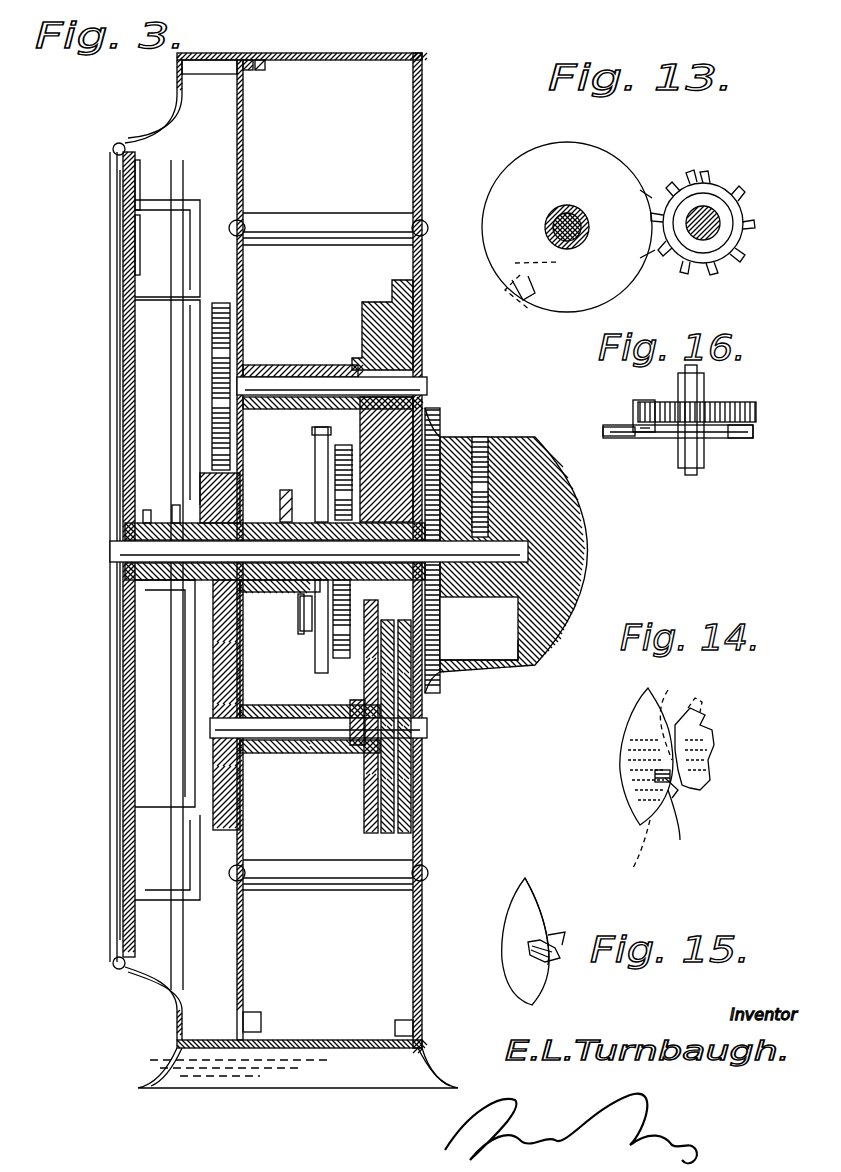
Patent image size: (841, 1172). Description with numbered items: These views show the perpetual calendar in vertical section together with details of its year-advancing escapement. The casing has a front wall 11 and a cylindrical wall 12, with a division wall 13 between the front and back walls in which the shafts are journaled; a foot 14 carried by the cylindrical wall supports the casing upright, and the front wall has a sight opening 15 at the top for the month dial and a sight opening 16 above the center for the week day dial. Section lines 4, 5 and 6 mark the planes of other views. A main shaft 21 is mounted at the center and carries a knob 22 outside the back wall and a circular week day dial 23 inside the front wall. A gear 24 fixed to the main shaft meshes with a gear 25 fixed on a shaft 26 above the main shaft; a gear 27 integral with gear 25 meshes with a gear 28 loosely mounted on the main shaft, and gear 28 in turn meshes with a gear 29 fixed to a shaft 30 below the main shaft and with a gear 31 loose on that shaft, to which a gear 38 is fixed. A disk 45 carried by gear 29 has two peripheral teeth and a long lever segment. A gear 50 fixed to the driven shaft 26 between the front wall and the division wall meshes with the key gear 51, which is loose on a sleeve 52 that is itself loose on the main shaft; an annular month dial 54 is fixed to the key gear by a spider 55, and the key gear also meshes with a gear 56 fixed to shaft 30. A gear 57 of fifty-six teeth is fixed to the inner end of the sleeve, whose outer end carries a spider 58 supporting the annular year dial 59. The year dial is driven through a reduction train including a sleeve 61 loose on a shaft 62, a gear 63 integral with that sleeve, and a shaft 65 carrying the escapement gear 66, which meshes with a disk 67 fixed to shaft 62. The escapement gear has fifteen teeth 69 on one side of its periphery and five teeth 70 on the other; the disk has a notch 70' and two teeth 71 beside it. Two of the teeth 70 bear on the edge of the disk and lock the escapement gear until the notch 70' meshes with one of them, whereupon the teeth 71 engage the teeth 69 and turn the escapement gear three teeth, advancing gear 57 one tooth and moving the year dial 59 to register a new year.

In FIG. 3, the section line 4 is at (212, 935).
In FIG. 3, the section line 5 is at (415, 265).
In FIG. 3, the section line 6 is at (110, 548).
In FIG. 3, the front wall 11 is at (112, 290).
In FIG. 3, the cylindrical wall 12 is at (322, 52).
In FIG. 3, the division wall 13 is at (245, 129).
In FIG. 3, the foot 14 is at (170, 1069).
In FIG. 3, the sight opening 15 is at (112, 154).
In FIG. 3, the sight opening 16 is at (118, 326).
In FIG. 3, the main shaft 21 is at (123, 553).
In FIG. 3, the knob 22 is at (565, 541).
In FIG. 3, the week day dial 23 is at (126, 410).
In FIG. 3, the gear 24 is at (412, 599).
In FIG. 3, the gear 25 is at (393, 284).
In FIG. 3, the shaft 26 is at (312, 375).
In FIG. 3, the gear 27 is at (366, 321).
In FIG. 3, the gear 28 is at (408, 631).
In FIG. 3, the gear 29 is at (370, 779).
In FIG. 3, the shaft 30 is at (428, 723).
In FIG. 3, the gear 31 is at (385, 796).
In FIG. 3, the gear 38 is at (408, 791).
In FIG. 3, the disk 45 is at (352, 713).
In FIG. 3, the gear 50 is at (232, 336).
In FIG. 3, the key gear 51 is at (295, 471).
In FIG. 3, the sleeve 52 is at (268, 521).
In FIG. 3, the month dial 54 is at (125, 201).
In FIG. 3, the spider 55 is at (198, 256).
In FIG. 3, the gear 56 is at (220, 691).
In FIG. 3, the gear 57 is at (333, 661).
In FIG. 3, the spider 58 is at (195, 346).
In FIG. 3, the year dial 59 is at (125, 256).
In FIG. 13, the sleeve 61 is at (585, 229).
In FIG. 13, the shaft 62 is at (575, 206).
In FIG. 3, the gear 63 is at (346, 445).
In FIG. 13, the shaft 65 is at (705, 211).
In FIG. 16, the shaft 65 is at (698, 477).
In FIG. 13, the escapement gear 66 is at (690, 263).
In FIG. 16, the escapement gear 66 is at (755, 426).
In FIG. 14, the escapement gear 66 is at (700, 741).
In FIG. 3, the disk 67 is at (304, 638).
In FIG. 13, the disk 67 is at (576, 313).
In FIG. 16, the disk 67 is at (620, 439).
In FIG. 14, the disk 67 is at (635, 791).
In FIG. 15, the disk 67 is at (522, 971).
In FIG. 13, the teeth 69 is at (746, 251).
In FIG. 16, the teeth 69 is at (740, 399).
In FIG. 14, the teeth 69 is at (672, 716).
In FIG. 3, the teeth 70 is at (424, 433).
In FIG. 13, the teeth 70 is at (689, 217).
In FIG. 16, the teeth 70 is at (746, 447).
In FIG. 14, the teeth 70 is at (695, 803).
In FIG. 13, the notch 70' is at (519, 308).
In FIG. 16, the notch 70' is at (645, 458).
In FIG. 14, the notch 70' is at (681, 827).
In FIG. 15, the notch 70' is at (510, 919).
In FIG. 3, the teeth 71 is at (300, 625).
In FIG. 13, the teeth 71 is at (538, 263).
In FIG. 16, the teeth 71 is at (640, 406).
In FIG. 14, the teeth 71 is at (612, 759).
In FIG. 15, the teeth 71 is at (560, 936).